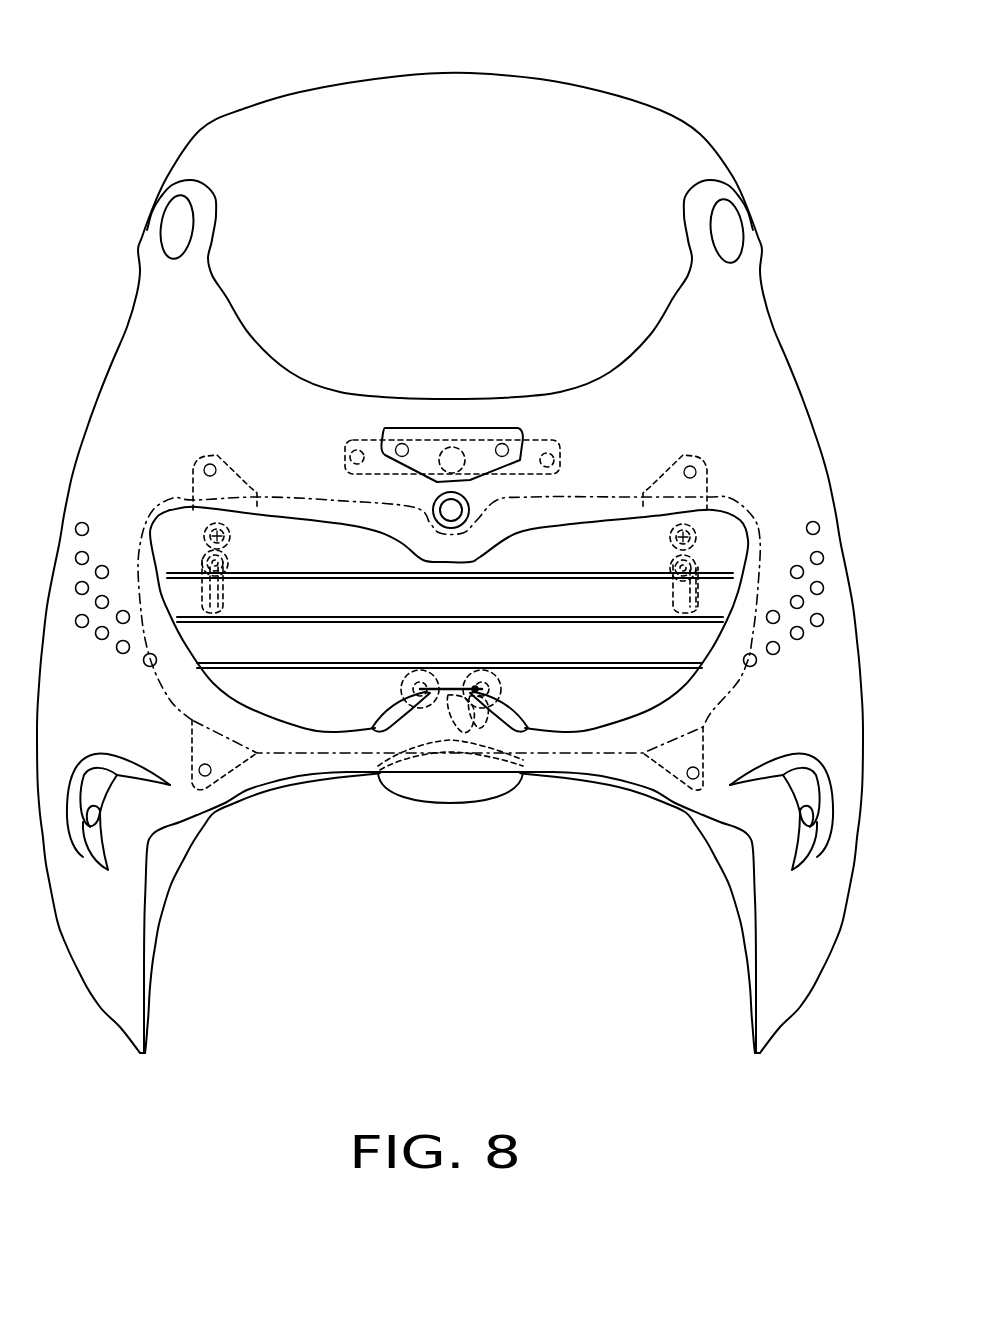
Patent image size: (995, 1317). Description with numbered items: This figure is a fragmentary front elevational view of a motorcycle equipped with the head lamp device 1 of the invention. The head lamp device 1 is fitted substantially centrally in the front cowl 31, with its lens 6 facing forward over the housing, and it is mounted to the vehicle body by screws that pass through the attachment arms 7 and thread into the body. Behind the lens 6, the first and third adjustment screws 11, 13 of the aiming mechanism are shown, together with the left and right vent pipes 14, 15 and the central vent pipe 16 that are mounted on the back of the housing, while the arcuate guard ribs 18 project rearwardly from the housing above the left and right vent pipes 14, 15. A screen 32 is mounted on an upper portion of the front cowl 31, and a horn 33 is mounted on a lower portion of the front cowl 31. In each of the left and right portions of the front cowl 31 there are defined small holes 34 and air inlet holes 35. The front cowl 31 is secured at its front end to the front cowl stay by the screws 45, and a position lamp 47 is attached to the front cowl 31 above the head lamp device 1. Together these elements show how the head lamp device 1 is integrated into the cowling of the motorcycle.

The head lamp device 1 is at (563, 770).
The lens 6 is at (327, 700).
The attachment arms 7 is at (193, 470).
The first adjustment screw 11 is at (218, 536).
The third adjustment screw 13 is at (372, 729).
The left vent pipe 14 is at (675, 584).
The right vent pipe 15 is at (225, 592).
The central vent pipe 16 is at (457, 691).
The guard ribs 18 is at (205, 560).
The front cowl 31 is at (783, 355).
The screen 32 is at (495, 73).
The horn 33 is at (450, 803).
The small holes 34 is at (78, 593).
The air inlet holes 35 is at (92, 824).
The screws 45 is at (456, 503).
The position lamp 47 is at (423, 427).